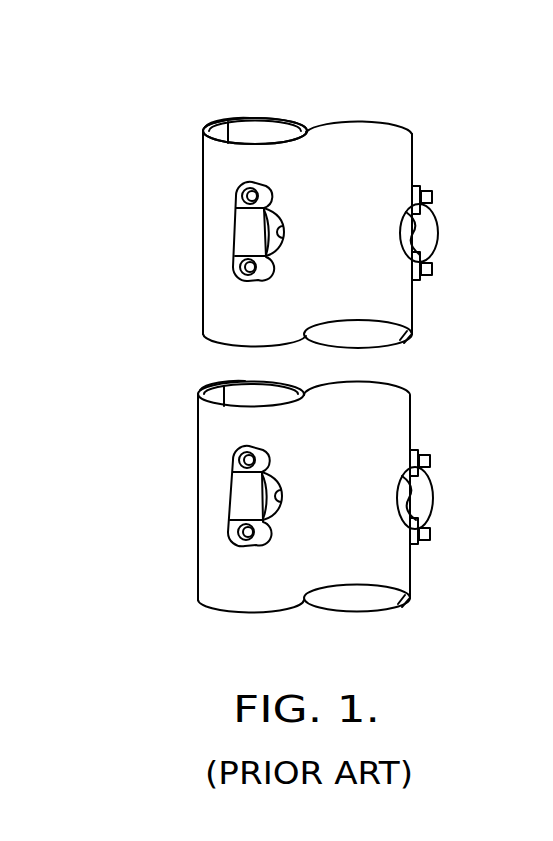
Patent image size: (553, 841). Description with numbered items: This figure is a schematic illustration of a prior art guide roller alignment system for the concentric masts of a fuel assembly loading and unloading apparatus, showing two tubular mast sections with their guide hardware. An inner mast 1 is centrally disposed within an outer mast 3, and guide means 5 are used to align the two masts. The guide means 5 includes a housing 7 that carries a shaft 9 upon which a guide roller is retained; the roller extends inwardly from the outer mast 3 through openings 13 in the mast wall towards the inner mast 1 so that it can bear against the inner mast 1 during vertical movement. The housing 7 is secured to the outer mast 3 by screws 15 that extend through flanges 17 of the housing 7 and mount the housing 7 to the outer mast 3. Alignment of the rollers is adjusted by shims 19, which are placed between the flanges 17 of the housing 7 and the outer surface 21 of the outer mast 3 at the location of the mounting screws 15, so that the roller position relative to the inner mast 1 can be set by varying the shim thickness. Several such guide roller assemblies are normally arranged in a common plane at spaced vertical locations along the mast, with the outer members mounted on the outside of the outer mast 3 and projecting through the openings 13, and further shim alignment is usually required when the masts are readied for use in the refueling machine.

The inner mast 1 is at (238, 137).
The outer mast 3 is at (202, 183).
The guide means 5 is at (455, 219).
The housing 7 is at (238, 498).
The shaft 9 is at (285, 232).
The openings 13 is at (404, 520).
The screws 15 is at (241, 197).
The flanges 17 is at (266, 200).
The shims 19 is at (414, 186).
The outer surface 21 is at (387, 457).